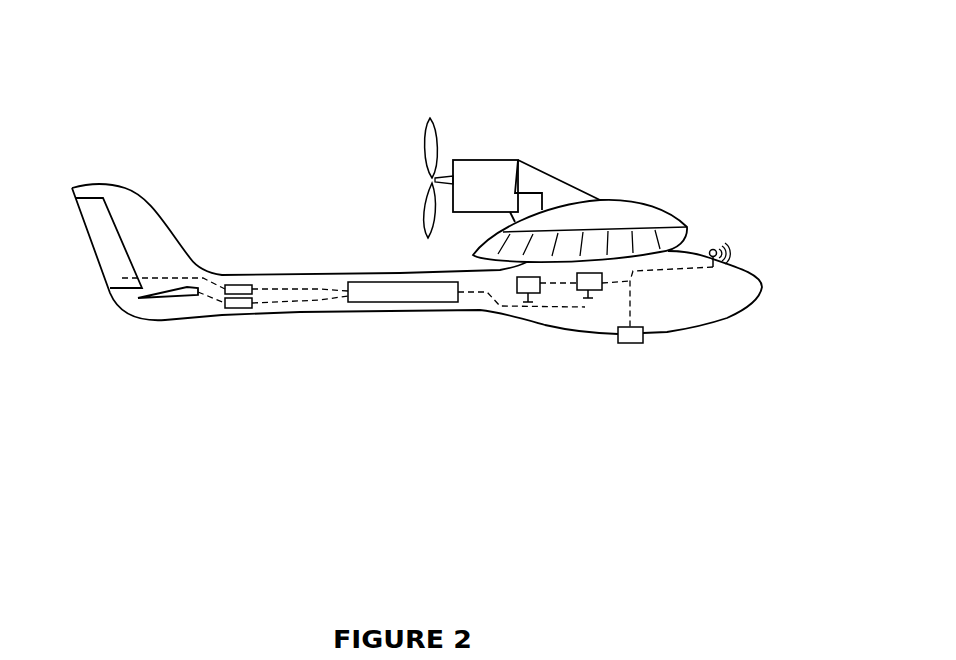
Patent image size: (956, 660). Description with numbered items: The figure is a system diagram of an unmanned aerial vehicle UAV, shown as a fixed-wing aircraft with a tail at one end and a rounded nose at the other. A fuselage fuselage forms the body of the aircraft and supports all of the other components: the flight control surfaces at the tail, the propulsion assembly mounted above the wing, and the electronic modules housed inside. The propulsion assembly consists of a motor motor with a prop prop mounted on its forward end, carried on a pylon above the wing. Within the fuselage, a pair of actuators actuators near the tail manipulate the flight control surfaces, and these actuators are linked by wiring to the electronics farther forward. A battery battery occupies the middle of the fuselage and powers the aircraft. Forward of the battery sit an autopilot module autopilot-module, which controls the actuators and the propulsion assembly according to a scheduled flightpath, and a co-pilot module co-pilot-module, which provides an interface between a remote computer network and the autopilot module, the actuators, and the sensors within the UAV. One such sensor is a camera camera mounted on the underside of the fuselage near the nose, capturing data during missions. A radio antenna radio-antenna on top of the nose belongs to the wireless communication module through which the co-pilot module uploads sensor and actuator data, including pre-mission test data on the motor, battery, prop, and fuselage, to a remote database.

The unmanned aerial vehicle UAV is at (594, 150).
The element prop is at (437, 108).
The element motor is at (498, 143).
The radio antenna radio-antenna is at (747, 207).
The element actuators is at (245, 328).
The element battery is at (466, 316).
The autopilot module autopilot-module is at (522, 295).
The co-pilot module co-pilot-module is at (588, 295).
The element camera is at (629, 356).
The element fuselage is at (707, 325).